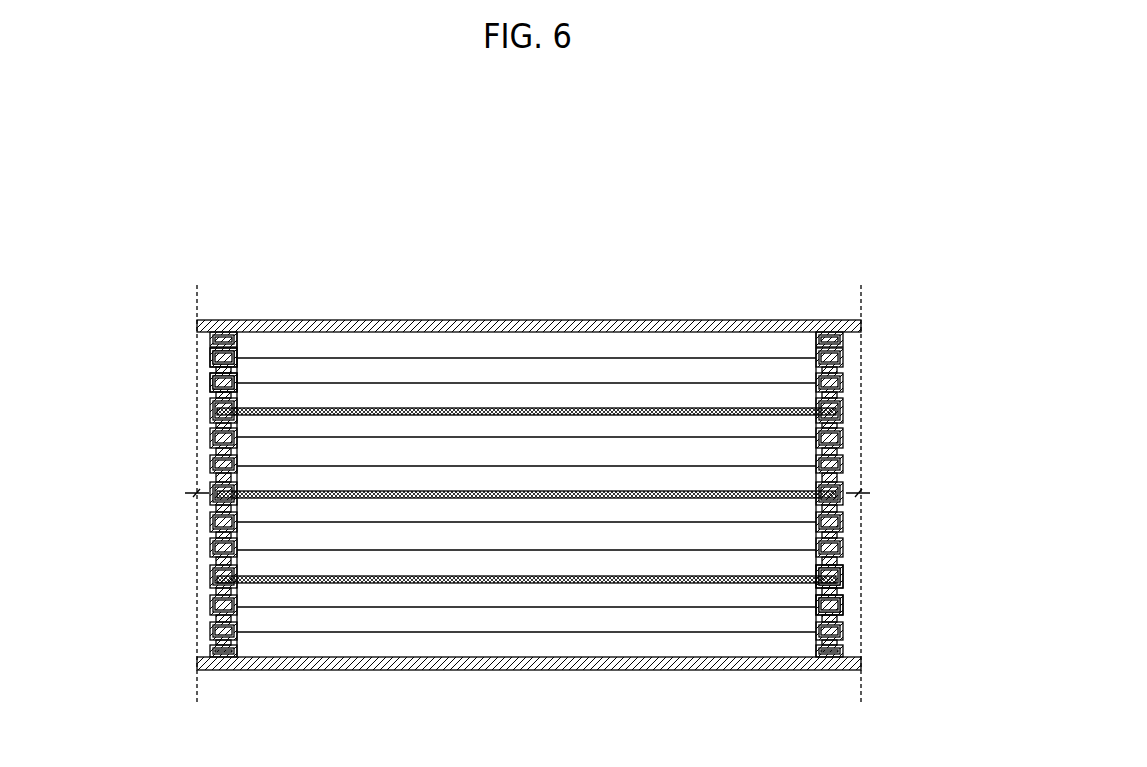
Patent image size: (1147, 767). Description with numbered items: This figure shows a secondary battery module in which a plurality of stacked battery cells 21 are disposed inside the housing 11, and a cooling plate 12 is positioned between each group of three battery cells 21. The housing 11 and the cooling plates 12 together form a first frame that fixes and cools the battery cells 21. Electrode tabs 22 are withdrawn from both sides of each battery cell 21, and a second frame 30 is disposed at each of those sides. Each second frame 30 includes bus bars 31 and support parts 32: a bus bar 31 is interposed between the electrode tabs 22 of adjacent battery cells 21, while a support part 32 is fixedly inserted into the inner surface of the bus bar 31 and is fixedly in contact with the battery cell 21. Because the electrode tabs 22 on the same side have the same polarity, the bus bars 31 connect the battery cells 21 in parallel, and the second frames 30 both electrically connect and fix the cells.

The housing 11 is at (492, 320).
The cooling plate 12 is at (843, 410).
The battery cell 21 is at (665, 343).
The electrode tab 22 is at (843, 450).
The second frame 30 is at (529, 500).
The bus bar 31 is at (210, 352).
The support part 32 is at (212, 385).